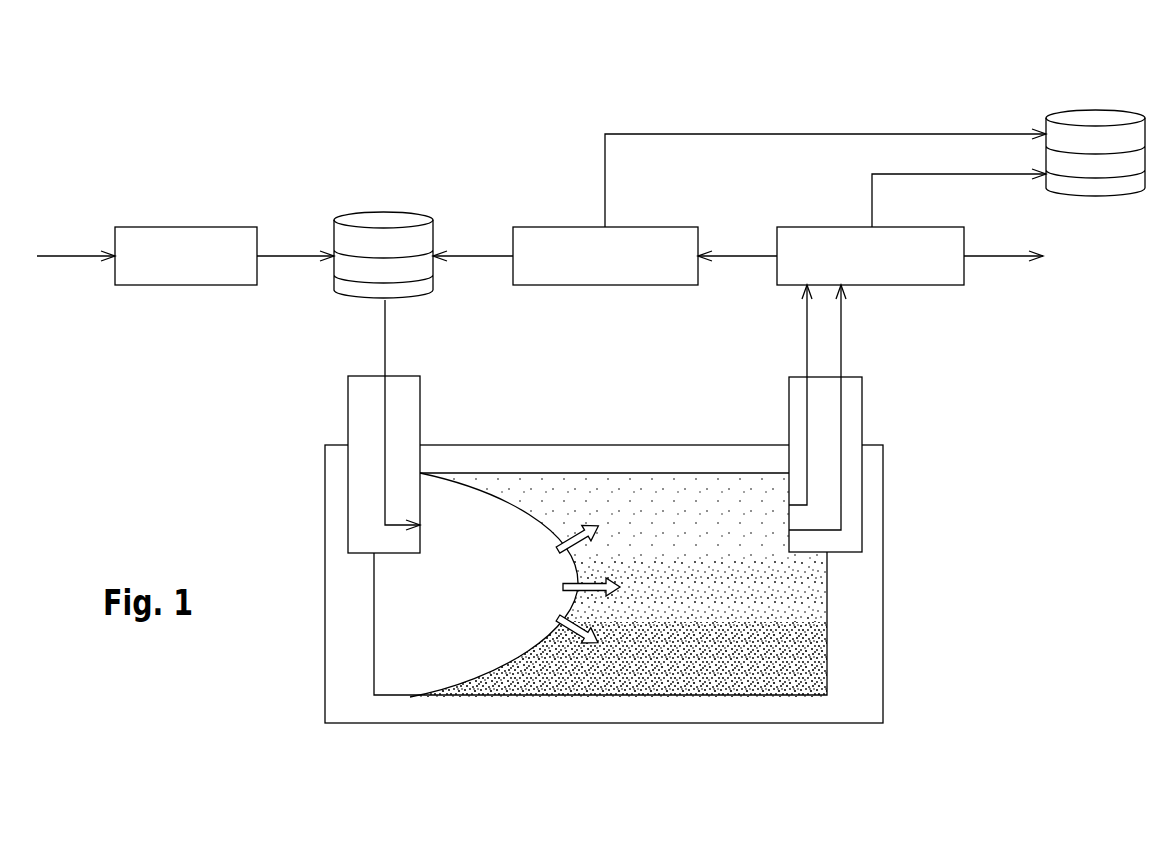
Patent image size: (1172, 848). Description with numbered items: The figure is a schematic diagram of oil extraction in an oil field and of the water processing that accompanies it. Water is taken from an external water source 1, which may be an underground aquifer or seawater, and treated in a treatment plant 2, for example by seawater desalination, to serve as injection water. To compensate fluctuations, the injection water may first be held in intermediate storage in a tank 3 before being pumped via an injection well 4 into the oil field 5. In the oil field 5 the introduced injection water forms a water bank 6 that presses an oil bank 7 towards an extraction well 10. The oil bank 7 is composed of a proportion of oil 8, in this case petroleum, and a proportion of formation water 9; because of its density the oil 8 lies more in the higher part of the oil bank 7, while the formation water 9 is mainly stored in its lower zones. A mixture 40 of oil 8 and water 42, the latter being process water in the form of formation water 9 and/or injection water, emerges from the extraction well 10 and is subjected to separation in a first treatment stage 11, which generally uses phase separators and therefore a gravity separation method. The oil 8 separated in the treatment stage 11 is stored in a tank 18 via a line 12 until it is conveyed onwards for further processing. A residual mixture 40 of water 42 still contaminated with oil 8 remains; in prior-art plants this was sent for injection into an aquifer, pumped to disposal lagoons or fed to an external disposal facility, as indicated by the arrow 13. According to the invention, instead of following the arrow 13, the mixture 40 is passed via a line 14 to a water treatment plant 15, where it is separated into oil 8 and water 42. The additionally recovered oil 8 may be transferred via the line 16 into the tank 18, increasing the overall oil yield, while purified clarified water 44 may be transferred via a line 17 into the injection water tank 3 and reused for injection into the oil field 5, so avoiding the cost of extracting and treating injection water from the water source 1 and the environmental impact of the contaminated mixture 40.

The external water source 1 is at (36, 257).
The treatment plant 2 is at (224, 256).
The tank 3 is at (383, 220).
The injection well 4 is at (420, 405).
The oil field 5 is at (603, 723).
The water bank 6 is at (515, 585).
The oil bank 7 is at (600, 591).
The oil 8 is at (807, 332).
The formation water 9 is at (600, 659).
The extraction well 10 is at (862, 408).
The first treatment stage 11 is at (870, 256).
The line 12 is at (977, 174).
The arrow 13 is at (1043, 256).
The line 14 is at (757, 256).
The water treatment plant 15 is at (605, 256).
The line 16 is at (981, 134).
The line 17 is at (471, 256).
The tank 18 is at (1092, 113).
The mixture 40 is at (738, 262).
The water 42 is at (841, 334).
The purified clarified water 44 is at (490, 258).